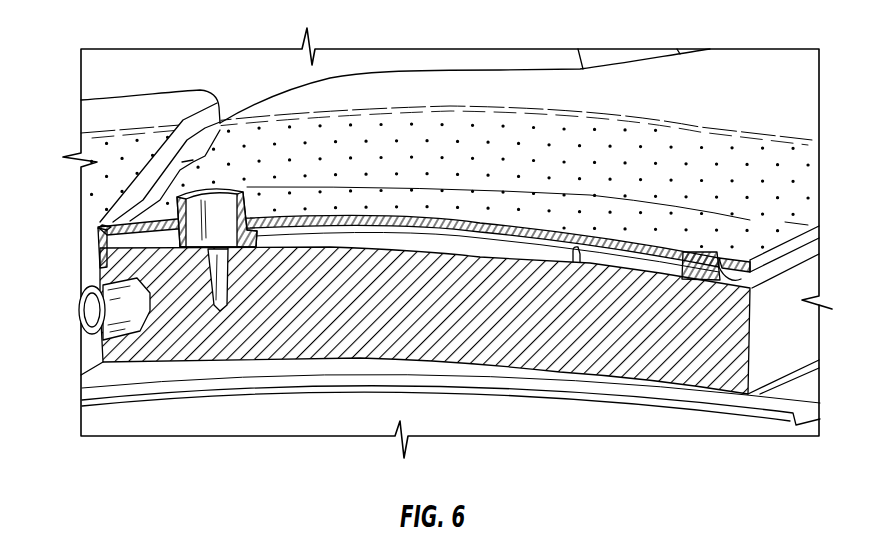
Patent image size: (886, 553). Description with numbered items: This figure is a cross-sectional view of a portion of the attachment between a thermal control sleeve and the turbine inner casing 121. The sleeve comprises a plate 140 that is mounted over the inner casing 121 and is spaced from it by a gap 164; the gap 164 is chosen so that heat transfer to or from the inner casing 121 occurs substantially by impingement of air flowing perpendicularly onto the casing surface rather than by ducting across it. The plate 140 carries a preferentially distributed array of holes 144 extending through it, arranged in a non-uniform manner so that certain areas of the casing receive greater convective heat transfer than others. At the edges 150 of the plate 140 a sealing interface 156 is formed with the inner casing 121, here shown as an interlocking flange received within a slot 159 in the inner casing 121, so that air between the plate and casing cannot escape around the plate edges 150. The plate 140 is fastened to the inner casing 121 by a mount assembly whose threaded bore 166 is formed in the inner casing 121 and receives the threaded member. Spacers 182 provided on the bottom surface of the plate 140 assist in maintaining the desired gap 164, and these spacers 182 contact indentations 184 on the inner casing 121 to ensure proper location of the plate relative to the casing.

The turbine inner casing 121 is at (542, 338).
The plate 140 is at (123, 158).
The holes 144 is at (455, 198).
The edges 150 is at (144, 163).
The sealing interface 156 is at (102, 250).
The slot 159 is at (113, 264).
The gap 164 is at (586, 259).
The threaded bore 166 is at (232, 288).
The spacers 182 is at (733, 263).
The indentations 184 is at (751, 292).